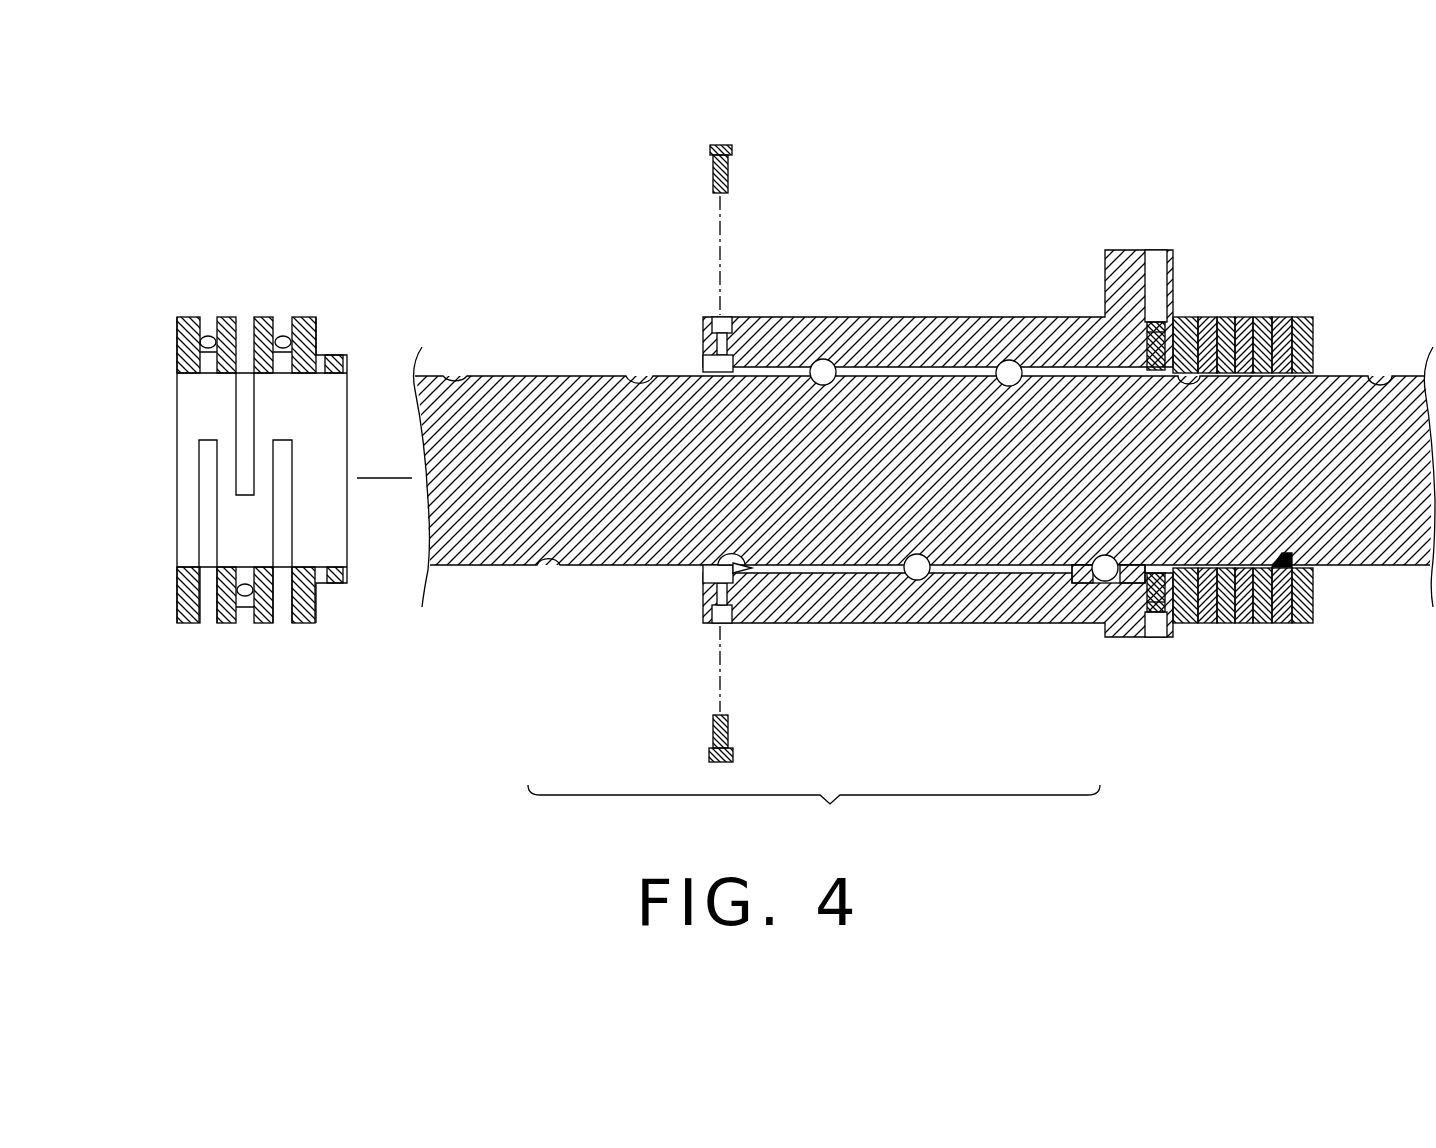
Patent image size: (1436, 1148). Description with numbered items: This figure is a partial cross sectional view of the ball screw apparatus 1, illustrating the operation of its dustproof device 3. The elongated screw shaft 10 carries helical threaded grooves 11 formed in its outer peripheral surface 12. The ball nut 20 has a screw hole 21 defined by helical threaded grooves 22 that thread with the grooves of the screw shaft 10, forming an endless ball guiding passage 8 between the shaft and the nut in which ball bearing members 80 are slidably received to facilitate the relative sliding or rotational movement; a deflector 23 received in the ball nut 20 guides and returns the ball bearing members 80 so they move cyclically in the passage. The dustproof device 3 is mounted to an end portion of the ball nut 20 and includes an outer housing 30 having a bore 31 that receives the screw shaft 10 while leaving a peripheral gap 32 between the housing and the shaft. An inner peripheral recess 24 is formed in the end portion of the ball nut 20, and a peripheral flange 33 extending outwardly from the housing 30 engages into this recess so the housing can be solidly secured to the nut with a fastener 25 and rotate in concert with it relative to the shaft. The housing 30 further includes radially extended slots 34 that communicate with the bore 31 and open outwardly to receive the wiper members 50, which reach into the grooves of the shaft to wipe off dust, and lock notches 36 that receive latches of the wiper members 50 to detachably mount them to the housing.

The ball screw apparatus 1 is at (1142, 170).
The dustproof device 3 is at (1262, 284).
The endless ball guiding passage 8 is at (1013, 360).
The screw shaft 10 is at (613, 528).
The helical threaded grooves 11 is at (548, 565).
The outer peripheral surface 12 is at (533, 376).
The ball nut 20 is at (968, 318).
The screw hole 21 is at (1048, 380).
The helical threaded grooves 22 is at (830, 380).
The deflector 23 is at (1133, 582).
The inner peripheral recess 24 is at (715, 368).
The fastener 25 is at (728, 172).
The outer housing 30 is at (305, 316).
The bore 31 is at (193, 402).
The peripheral gap 32 is at (1292, 560).
The peripheral flange 33 is at (347, 583).
The radially extended slots 34 is at (209, 617).
The lock notch 36 is at (208, 335).
The wiper member 50 is at (1205, 605).
The ball bearing member 80 is at (917, 580).